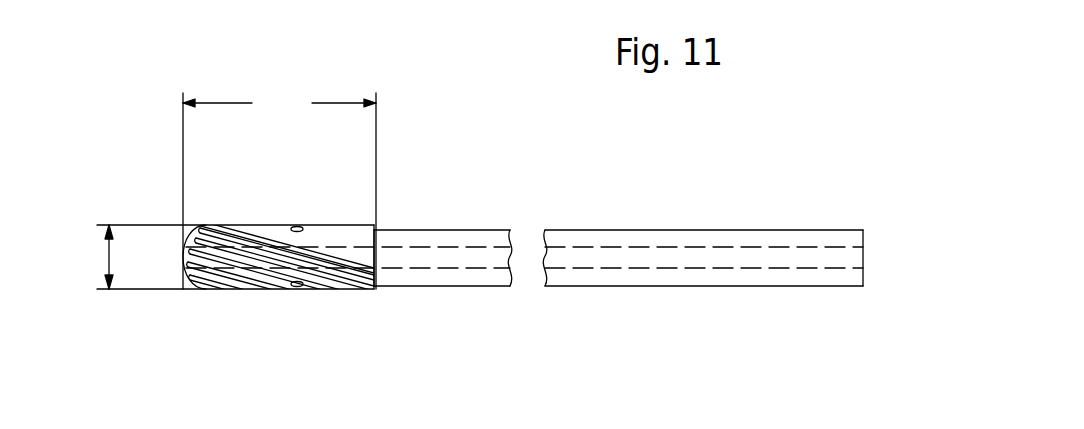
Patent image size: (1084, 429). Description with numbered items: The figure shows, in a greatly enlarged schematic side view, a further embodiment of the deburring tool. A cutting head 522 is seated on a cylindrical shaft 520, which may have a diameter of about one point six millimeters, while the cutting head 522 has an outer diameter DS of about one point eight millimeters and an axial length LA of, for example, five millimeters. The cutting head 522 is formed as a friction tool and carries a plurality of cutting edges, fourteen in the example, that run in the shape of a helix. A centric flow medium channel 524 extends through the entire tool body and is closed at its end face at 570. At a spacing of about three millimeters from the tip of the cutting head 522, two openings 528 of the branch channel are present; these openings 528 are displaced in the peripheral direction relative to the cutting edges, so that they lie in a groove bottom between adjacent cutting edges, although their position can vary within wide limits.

The cylindrical shaft 520 is at (753, 238).
The cutting head 522 is at (250, 292).
The flow medium channel 524 is at (458, 249).
The openings 528 is at (297, 228).
The closed end face 570 is at (179, 248).
The outer diameter DS is at (108, 255).
The axial length LA is at (279, 188).